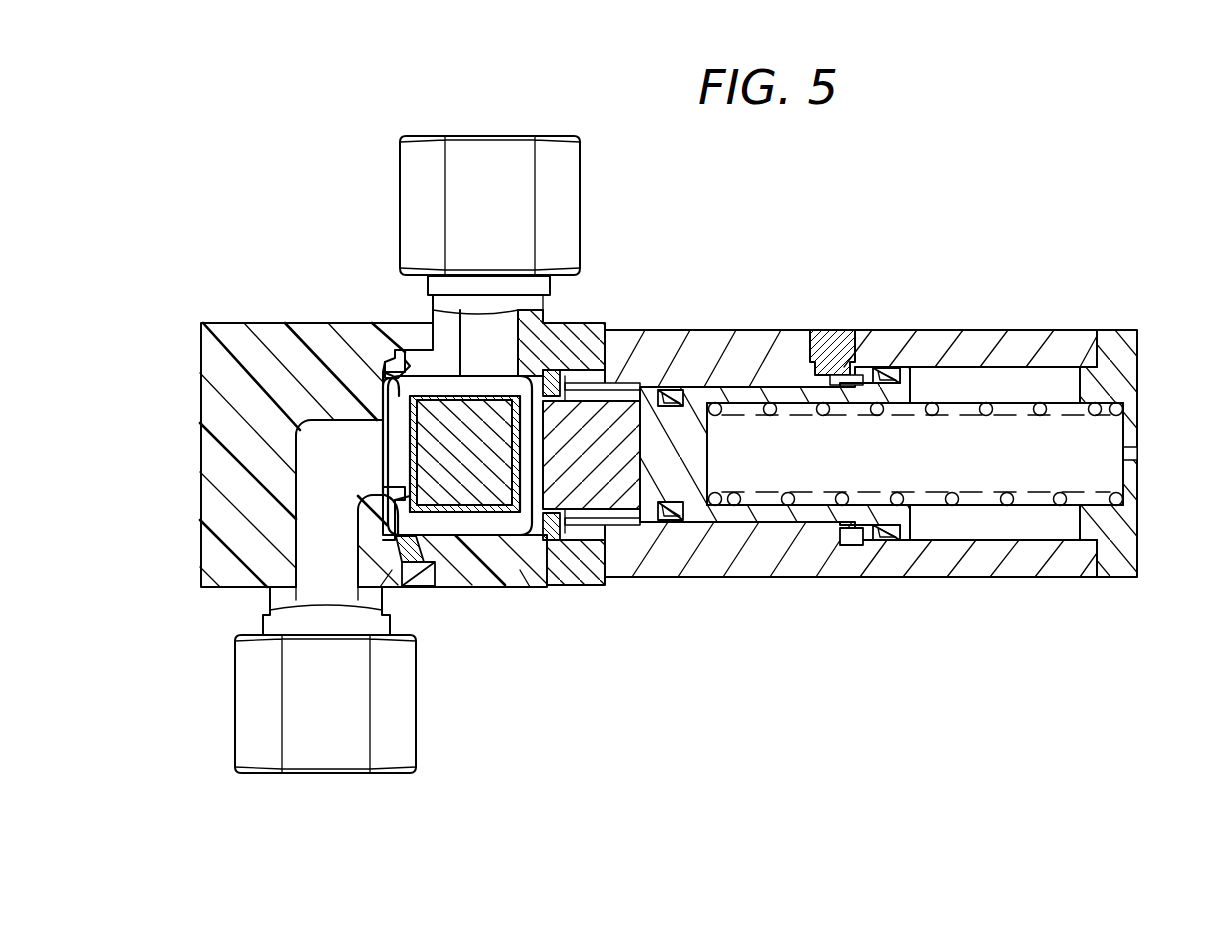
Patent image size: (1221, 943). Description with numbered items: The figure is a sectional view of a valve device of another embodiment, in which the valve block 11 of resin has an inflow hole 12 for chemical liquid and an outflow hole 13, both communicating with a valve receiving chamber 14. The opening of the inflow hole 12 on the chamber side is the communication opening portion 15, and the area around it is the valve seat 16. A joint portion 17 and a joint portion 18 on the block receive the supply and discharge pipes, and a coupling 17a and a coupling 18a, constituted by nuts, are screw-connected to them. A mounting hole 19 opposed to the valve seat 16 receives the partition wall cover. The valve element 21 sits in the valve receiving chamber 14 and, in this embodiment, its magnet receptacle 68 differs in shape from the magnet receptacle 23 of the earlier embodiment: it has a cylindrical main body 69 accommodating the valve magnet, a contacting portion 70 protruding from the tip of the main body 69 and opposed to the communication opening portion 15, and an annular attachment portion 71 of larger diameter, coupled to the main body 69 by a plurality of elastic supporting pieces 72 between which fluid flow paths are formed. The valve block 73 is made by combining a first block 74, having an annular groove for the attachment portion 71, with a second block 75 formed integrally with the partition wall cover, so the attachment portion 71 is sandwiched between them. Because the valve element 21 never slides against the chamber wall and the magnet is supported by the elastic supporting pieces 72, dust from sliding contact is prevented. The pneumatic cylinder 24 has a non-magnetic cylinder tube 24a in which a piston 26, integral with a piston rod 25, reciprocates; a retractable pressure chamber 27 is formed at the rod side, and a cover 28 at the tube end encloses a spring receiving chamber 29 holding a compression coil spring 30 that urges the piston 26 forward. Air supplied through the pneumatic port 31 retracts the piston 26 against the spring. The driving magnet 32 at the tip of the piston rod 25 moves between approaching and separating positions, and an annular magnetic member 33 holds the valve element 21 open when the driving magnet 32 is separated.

The valve block 11 is at (222, 486).
The inflow hole 12 is at (340, 581).
The outflow hole 13 is at (474, 325).
The valve receiving chamber 14 is at (612, 420).
The communication opening portion 15 is at (390, 488).
The valve seat 16 is at (388, 572).
The joint portion 17 is at (263, 624).
The coupling 17a is at (323, 750).
The joint portion 18 is at (515, 285).
The coupling 18a is at (565, 165).
The mounting hole 19 is at (612, 525).
The valve element 21 is at (582, 345).
The magnet receptacle 23 is at (405, 478).
The pneumatic cylinder 24 is at (989, 326).
The cylinder tube 24a is at (1060, 345).
The piston rod 25 is at (742, 535).
The piston 26 is at (915, 540).
The retractable pressure chamber 27 is at (852, 547).
The cover 28 is at (1117, 370).
The spring receiving chamber 29 is at (1032, 471).
The compression coil spring 30 is at (888, 420).
The pneumatic port 31 is at (828, 348).
The driving magnet 32 is at (670, 398).
The magnetic member 33 is at (560, 542).
The magnet receptacle 68 is at (462, 400).
The main body 69 is at (508, 525).
The contacting portion 70 is at (375, 462).
The attachment portion 71 is at (400, 366).
The elastic supporting pieces 72 is at (393, 376).
The valve block 73 is at (533, 703).
The first block 74 is at (420, 582).
The second block 75 is at (556, 370).